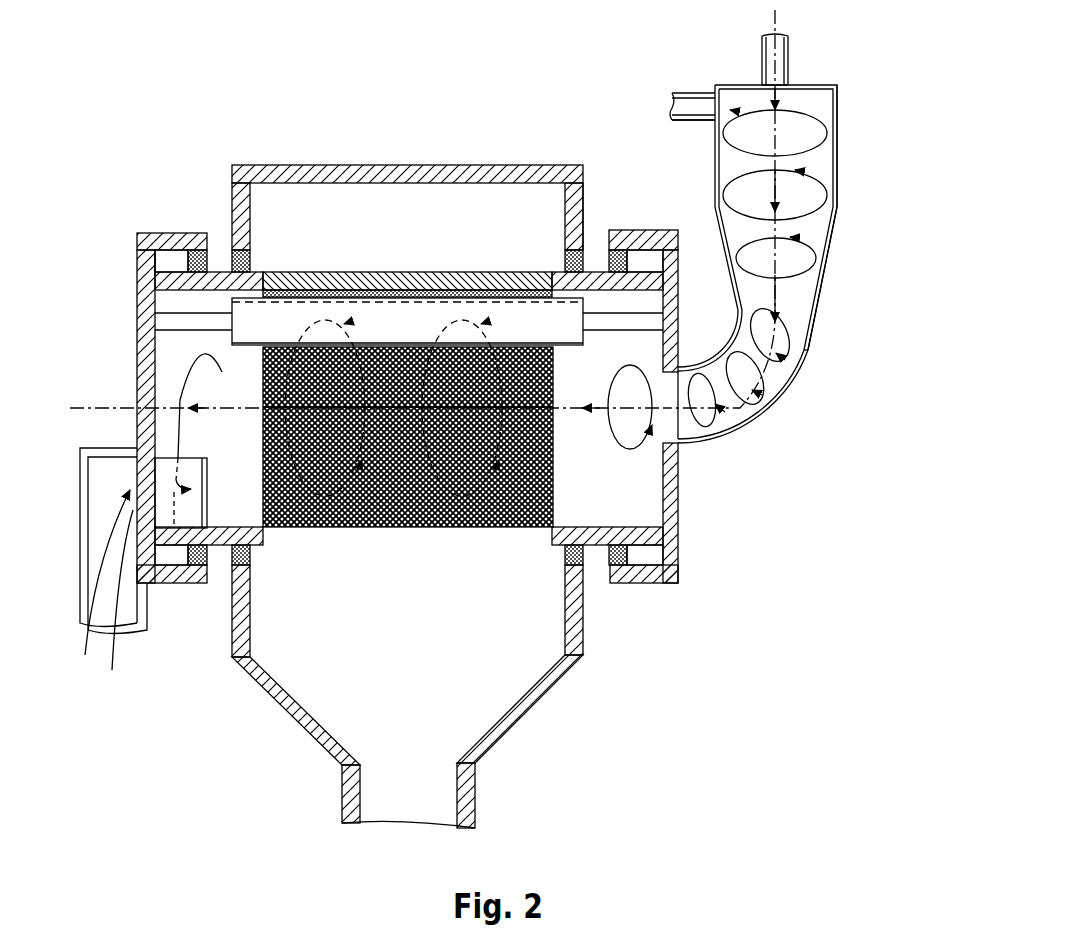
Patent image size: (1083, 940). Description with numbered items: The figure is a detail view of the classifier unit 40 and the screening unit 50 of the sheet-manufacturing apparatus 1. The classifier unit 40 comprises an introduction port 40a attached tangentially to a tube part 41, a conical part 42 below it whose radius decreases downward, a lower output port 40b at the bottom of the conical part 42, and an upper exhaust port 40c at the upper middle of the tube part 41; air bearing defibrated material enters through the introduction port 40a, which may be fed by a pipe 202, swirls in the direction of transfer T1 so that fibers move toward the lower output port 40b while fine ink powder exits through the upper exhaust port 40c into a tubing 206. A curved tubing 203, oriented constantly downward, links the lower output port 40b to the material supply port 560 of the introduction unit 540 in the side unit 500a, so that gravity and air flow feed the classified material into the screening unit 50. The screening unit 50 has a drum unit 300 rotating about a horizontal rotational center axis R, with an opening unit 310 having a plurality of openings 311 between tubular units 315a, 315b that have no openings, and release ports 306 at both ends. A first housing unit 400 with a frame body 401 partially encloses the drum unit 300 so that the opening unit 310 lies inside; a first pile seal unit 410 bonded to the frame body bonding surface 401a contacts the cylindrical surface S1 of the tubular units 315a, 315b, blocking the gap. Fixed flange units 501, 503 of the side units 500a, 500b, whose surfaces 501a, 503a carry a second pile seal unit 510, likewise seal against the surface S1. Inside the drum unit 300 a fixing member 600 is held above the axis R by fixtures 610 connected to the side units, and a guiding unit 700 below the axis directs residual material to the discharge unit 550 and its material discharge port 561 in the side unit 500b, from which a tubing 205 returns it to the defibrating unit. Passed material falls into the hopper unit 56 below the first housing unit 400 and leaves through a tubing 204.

The dust collecting device 1 is at (490, 61).
The classifier unit 40 is at (875, 81).
The introduction port 40a is at (712, 100).
The lower output port 40b is at (794, 364).
The upper exhaust port 40c is at (789, 73).
The tube part 41 is at (838, 101).
The conical part 42 is at (824, 244).
The screening unit 50 is at (235, 162).
The hopper unit 56 is at (305, 690).
The gas inlet pipe 202 is at (690, 122).
The tubing 203 is at (784, 392).
The tubing 204 is at (433, 806).
The tubing 205 is at (118, 464).
The tubing 206 is at (790, 40).
The drum unit 300 is at (355, 228).
The release ports 306 is at (260, 380).
The opening unit 310 is at (408, 268).
The openings 311 is at (440, 530).
The tubular unit 315a is at (584, 279).
The tubular unit 315b is at (222, 548).
The first housing unit 400 is at (456, 161).
The frame body 401 is at (584, 172).
The frame body bonding surface 401a is at (566, 262).
The first pile seal unit 410 is at (252, 266).
The side unit 500a is at (672, 524).
The side unit 500b is at (138, 306).
The flange unit 501 is at (637, 583).
The surface 501a is at (660, 558).
The flange unit 503 is at (166, 234).
The surface 503a is at (153, 268).
The second pile seal unit 510 is at (195, 262).
The introduction unit 540 is at (760, 426).
The discharge unit 550 is at (90, 580).
The material supply port 560 is at (696, 433).
The material discharge port 561 is at (113, 602).
The fixing member 600 is at (442, 310).
The fixture 610 is at (595, 345).
The guiding unit 700 is at (198, 473).
The rotational center axis R is at (104, 404).
The surface S1 is at (219, 268).
The direction of transfer T1 is at (777, 128).